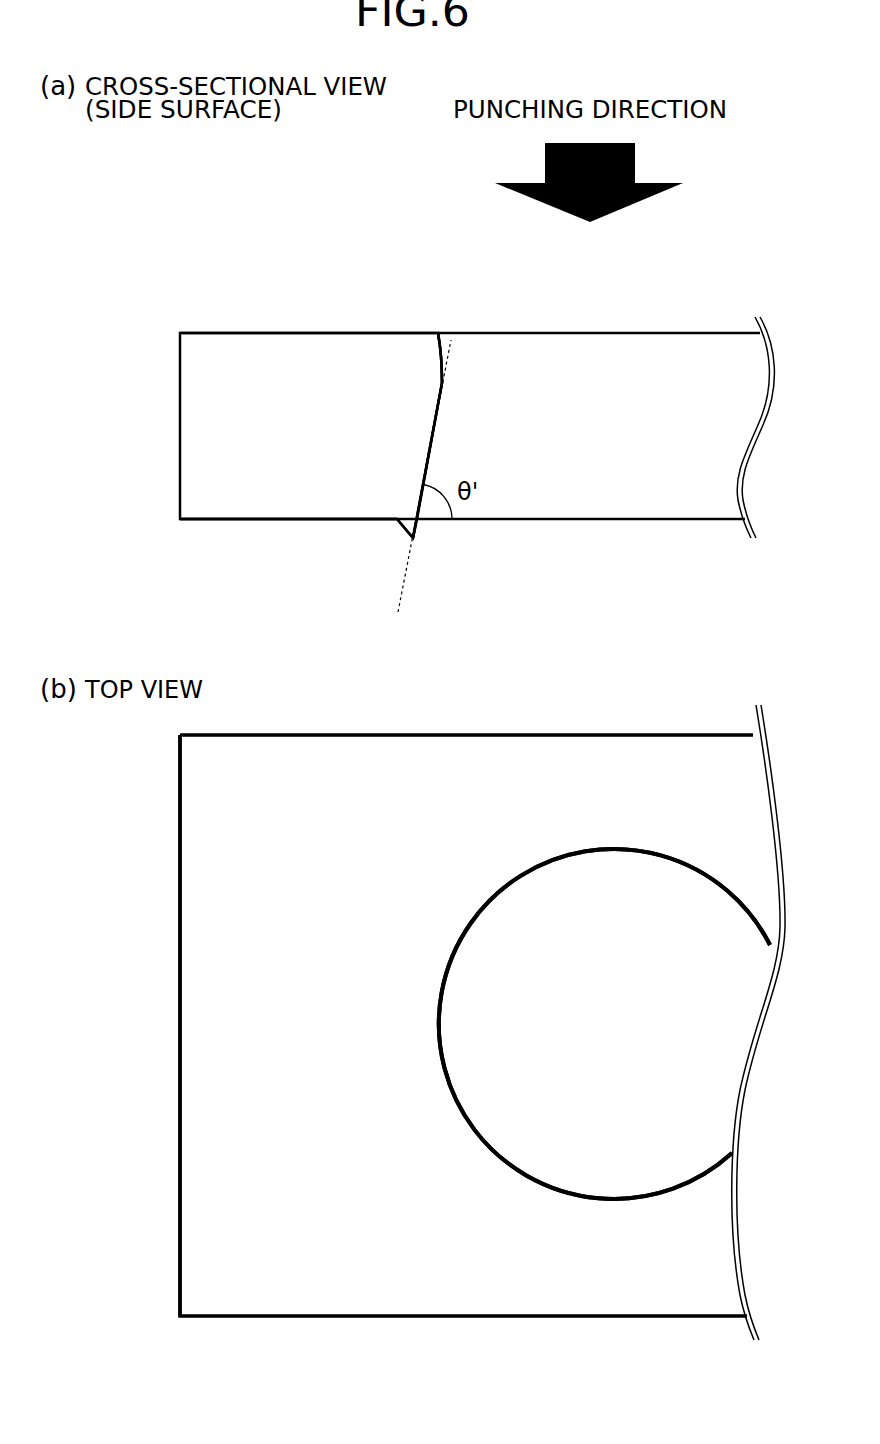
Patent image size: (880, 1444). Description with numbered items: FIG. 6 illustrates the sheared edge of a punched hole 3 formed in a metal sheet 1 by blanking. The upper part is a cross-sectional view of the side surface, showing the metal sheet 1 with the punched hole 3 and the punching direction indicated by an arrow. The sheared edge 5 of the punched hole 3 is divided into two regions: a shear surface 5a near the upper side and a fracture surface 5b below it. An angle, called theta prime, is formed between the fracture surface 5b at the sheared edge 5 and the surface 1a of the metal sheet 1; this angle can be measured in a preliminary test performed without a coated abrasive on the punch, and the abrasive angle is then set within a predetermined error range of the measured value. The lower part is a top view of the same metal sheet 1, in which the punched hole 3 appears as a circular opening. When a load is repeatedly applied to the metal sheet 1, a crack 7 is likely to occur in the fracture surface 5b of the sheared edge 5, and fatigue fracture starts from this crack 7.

The metal sheet 1 is at (274, 330).
The surface of the metal sheet 1a is at (318, 520).
The punched hole 3 is at (640, 333).
The sheared edge 5 is at (459, 394).
The shear surface 5a is at (441, 360).
The fracture surface 5b is at (439, 433).
The crack 7 is at (615, 850).